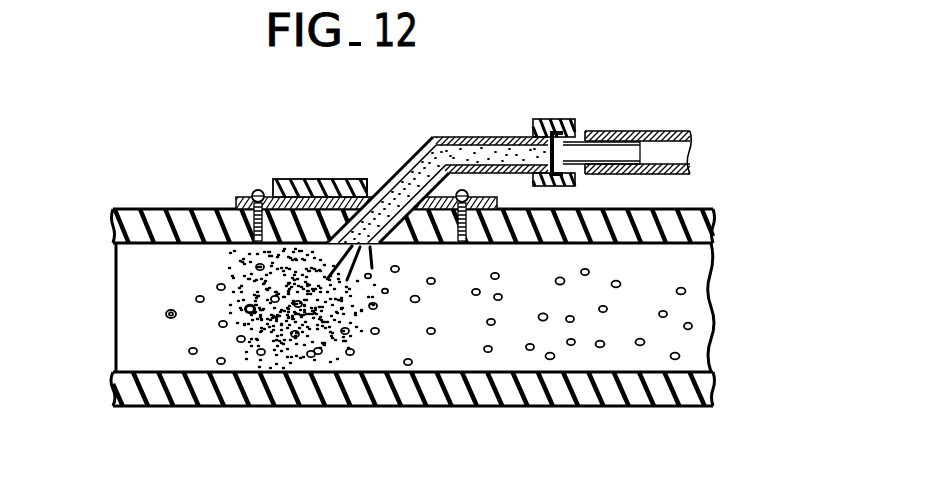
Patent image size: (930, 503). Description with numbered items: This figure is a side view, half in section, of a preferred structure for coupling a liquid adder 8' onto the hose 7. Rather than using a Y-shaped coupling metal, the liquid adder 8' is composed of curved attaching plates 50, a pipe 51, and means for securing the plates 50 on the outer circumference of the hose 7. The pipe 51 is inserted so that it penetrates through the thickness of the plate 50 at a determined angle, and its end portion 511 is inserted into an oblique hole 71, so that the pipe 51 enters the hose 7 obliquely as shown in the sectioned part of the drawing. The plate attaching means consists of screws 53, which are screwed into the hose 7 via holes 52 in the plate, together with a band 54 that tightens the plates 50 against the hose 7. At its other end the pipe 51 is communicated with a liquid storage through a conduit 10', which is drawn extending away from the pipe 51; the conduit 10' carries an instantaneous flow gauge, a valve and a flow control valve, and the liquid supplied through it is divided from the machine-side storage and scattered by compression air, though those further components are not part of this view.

The hose 7 is at (163, 209).
The screws 53 is at (252, 192).
The curved attaching plates 50 is at (300, 179).
The band 54 is at (334, 179).
The oblique hole 71 is at (363, 180).
The liquid adder 8' is at (451, 150).
The pipe 51 is at (479, 136).
The conduit 10' is at (627, 116).
The holes 52 is at (458, 194).
The end portion 511 is at (390, 246).